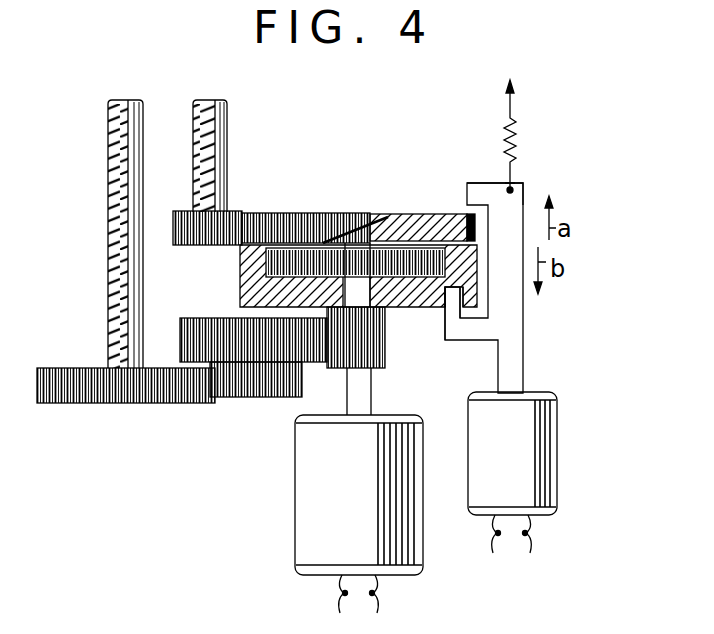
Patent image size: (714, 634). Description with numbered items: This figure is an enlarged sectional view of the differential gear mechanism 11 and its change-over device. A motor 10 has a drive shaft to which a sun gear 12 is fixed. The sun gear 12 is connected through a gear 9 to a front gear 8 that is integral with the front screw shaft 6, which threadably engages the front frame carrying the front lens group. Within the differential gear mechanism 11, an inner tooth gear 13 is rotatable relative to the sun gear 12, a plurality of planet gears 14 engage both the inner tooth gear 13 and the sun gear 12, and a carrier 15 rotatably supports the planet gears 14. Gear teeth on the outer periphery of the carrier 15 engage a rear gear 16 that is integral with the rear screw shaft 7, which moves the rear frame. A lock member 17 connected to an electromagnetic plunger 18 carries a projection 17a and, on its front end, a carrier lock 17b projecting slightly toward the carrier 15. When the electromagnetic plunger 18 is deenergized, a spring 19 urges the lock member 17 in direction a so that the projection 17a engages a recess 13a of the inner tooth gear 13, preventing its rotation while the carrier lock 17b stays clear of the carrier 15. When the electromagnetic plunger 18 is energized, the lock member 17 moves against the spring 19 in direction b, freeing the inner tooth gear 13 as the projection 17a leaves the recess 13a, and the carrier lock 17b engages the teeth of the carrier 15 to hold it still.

The front screw shaft 6 is at (115, 133).
The rear screw shaft 7 is at (197, 135).
The front gear 8 is at (108, 395).
The gear 9 is at (247, 397).
The motor 10 is at (310, 498).
The differential gear mechanism 11 is at (404, 168).
The sun gear 12 is at (381, 353).
The inner tooth gear 13 is at (475, 282).
The recess 13a is at (444, 306).
The planet gears 14 is at (405, 212).
The carrier 15 is at (438, 223).
The rear gear 16 is at (207, 246).
The lock member 17 is at (512, 365).
The projection 17a is at (450, 292).
The carrier lock 17b is at (479, 193).
The electromagnetic plunger 18 is at (484, 431).
The spring 19 is at (511, 150).